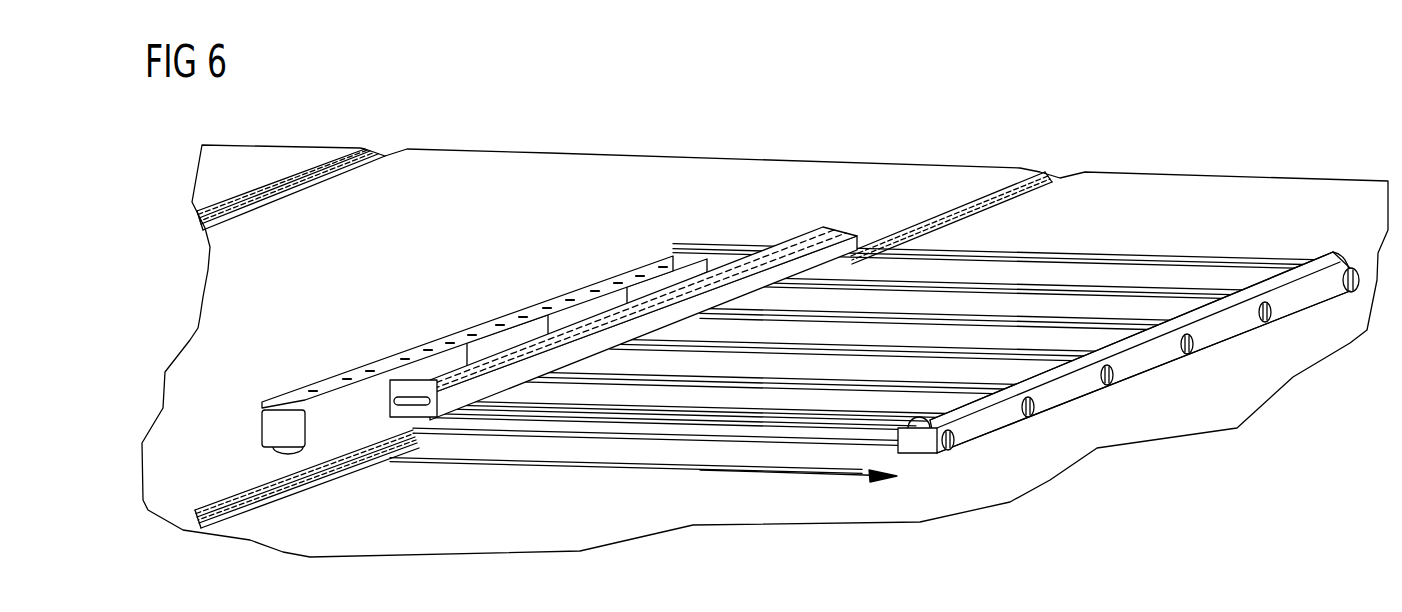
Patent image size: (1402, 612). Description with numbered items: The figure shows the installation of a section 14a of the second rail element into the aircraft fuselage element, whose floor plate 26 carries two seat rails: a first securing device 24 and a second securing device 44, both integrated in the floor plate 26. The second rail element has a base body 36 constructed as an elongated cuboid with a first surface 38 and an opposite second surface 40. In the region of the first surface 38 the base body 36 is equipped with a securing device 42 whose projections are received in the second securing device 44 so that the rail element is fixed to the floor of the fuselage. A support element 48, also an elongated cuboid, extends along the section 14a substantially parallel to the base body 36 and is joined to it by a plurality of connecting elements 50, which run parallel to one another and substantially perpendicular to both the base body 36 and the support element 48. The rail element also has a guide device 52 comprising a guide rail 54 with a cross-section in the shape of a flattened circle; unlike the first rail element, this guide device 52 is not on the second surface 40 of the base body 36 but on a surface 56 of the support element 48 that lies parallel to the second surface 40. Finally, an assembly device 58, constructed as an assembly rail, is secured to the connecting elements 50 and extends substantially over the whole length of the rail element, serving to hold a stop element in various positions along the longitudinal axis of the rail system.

The section of the second rail element 14a is at (1282, 134).
The first securing device 24 is at (300, 170).
The floor plate 26 is at (556, 166).
The base body 36 is at (706, 247).
The first surface 38 is at (270, 453).
The second surface 40 is at (327, 390).
The securing device 42 is at (255, 470).
The second securing device 44 is at (993, 190).
The support element 48 is at (1152, 358).
The connecting elements 50 is at (1045, 340).
The guide device 52 is at (1318, 246).
The guide rail 54 is at (1253, 278).
The surface of the support element 56 is at (983, 412).
The assembly device 58 is at (805, 228).